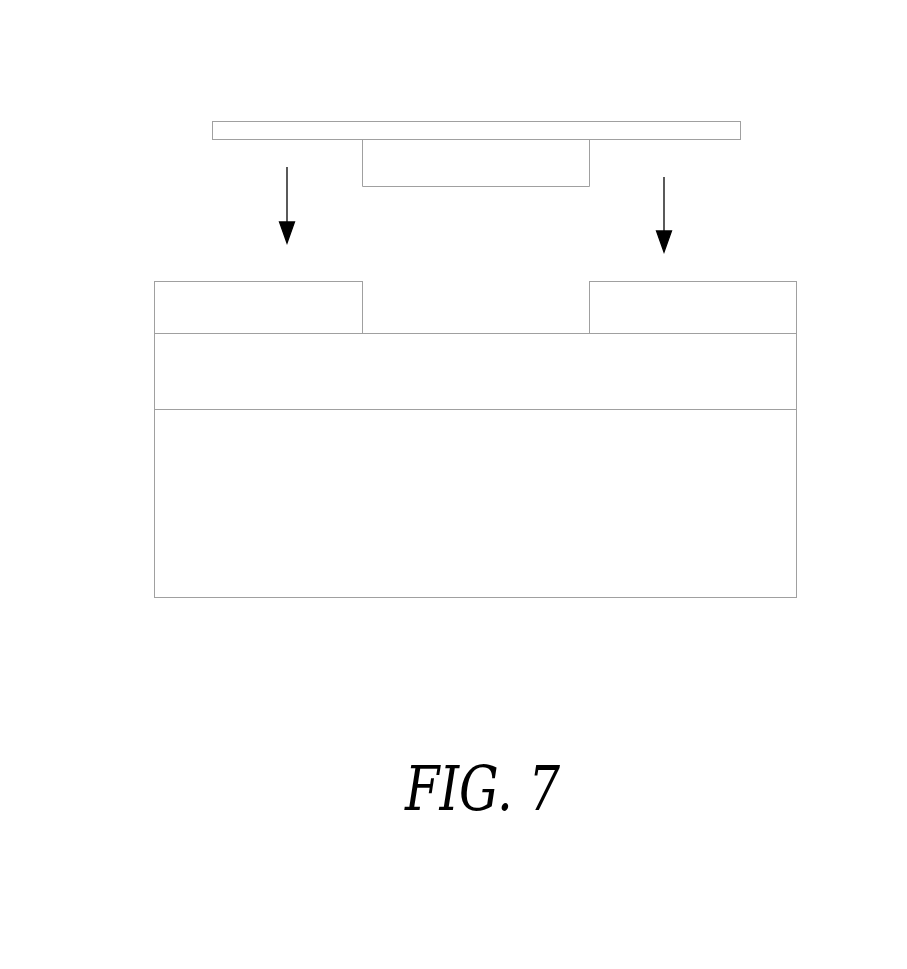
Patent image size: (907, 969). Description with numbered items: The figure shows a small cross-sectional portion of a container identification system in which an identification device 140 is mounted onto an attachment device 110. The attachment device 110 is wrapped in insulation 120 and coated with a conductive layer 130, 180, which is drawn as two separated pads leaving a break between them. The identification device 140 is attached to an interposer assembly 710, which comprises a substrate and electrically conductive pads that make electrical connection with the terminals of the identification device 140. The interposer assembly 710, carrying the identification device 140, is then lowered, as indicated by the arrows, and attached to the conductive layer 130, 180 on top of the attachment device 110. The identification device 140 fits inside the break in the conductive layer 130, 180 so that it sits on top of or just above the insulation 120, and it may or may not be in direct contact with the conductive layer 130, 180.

The interposer assembly 710 is at (739, 129).
The identification device 140 is at (589, 163).
The conductive layer 130 is at (154, 308).
The conductive layer 180 is at (796, 307).
The insulation 120 is at (796, 370).
The attachment device 110 is at (796, 503).